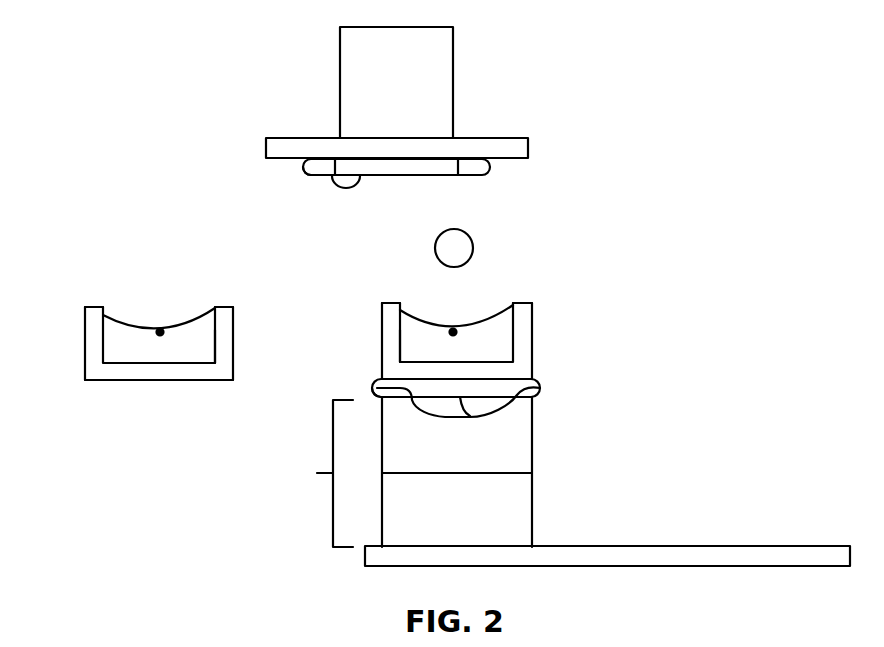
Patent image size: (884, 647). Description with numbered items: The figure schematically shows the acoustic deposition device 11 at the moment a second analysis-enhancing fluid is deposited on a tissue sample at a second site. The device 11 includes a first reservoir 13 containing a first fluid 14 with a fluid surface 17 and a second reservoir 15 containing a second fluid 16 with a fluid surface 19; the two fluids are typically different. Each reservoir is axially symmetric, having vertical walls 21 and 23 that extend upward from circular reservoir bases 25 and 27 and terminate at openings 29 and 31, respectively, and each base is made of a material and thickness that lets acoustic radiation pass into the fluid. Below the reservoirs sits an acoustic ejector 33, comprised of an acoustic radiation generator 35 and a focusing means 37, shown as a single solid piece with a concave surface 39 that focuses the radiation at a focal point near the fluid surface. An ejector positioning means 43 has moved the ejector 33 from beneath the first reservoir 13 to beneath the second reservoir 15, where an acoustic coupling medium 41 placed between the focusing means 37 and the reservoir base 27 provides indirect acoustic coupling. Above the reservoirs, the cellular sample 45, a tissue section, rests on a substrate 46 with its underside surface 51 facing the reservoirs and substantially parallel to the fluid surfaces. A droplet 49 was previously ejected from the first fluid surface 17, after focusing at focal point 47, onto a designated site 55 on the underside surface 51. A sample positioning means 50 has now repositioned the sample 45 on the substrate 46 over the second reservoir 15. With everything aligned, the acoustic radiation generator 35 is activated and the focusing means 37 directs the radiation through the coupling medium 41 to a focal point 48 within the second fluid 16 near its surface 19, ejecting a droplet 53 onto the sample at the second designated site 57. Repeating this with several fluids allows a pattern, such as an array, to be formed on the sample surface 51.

The device 11 is at (704, 384).
The first reservoir 13 is at (90, 340).
The first fluid 14 is at (205, 343).
The second reservoir 15 is at (525, 355).
The second fluid 16 is at (408, 348).
The fluid surface 17 is at (200, 312).
The fluid surface 19 is at (500, 310).
The vertical wall 21 is at (128, 322).
The vertical wall 23 is at (425, 325).
The reservoir base 25 is at (160, 380).
The reservoir base 27 is at (520, 390).
The opening 29 is at (115, 305).
The opening 31 is at (412, 305).
The acoustic ejector 33 is at (320, 473).
The acoustic radiation generator 35 is at (530, 523).
The focusing means 37 is at (530, 448).
The concave surface 39 is at (378, 392).
The acoustic coupling medium 41 is at (475, 416).
The ejector positioning means 43 is at (365, 550).
The cellular sample 45 is at (490, 165).
The substrate 46 is at (505, 138).
The focal point 47 is at (160, 330).
The focal point 48 is at (455, 330).
The droplet 49 is at (347, 186).
The sample positioning means 50 is at (453, 57).
The underside surface 51 is at (322, 177).
The droplet 53 is at (473, 247).
The designated site 55 is at (335, 177).
The second designated site 57 is at (453, 175).